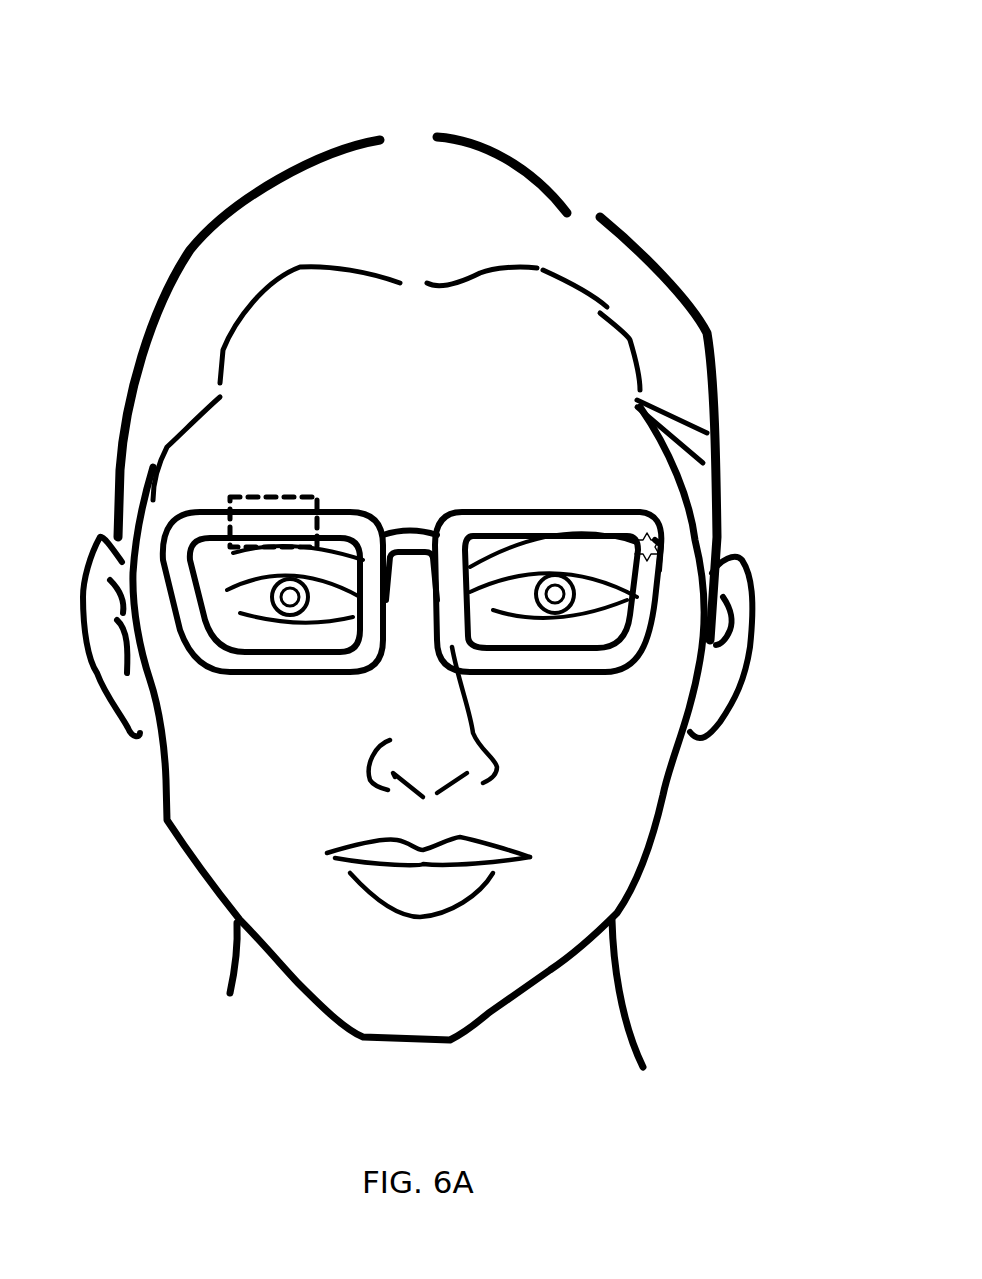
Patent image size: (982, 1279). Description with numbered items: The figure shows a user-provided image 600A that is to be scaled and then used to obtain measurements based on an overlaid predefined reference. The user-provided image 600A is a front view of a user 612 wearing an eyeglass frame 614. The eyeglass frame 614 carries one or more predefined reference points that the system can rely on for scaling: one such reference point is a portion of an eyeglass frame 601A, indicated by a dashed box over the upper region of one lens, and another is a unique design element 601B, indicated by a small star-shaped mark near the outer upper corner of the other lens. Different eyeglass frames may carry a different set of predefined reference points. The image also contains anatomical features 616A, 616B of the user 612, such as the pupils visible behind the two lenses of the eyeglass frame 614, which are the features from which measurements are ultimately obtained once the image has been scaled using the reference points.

The user-provided image 600A is at (369, 44).
The user 612 is at (630, 240).
The portion of an eyeglass frame 601A is at (273, 497).
The unique design element 601B is at (647, 532).
The eyeglass frame 614 is at (662, 553).
The anatomical feature 616A is at (300, 610).
The anatomical feature 616B is at (557, 613).